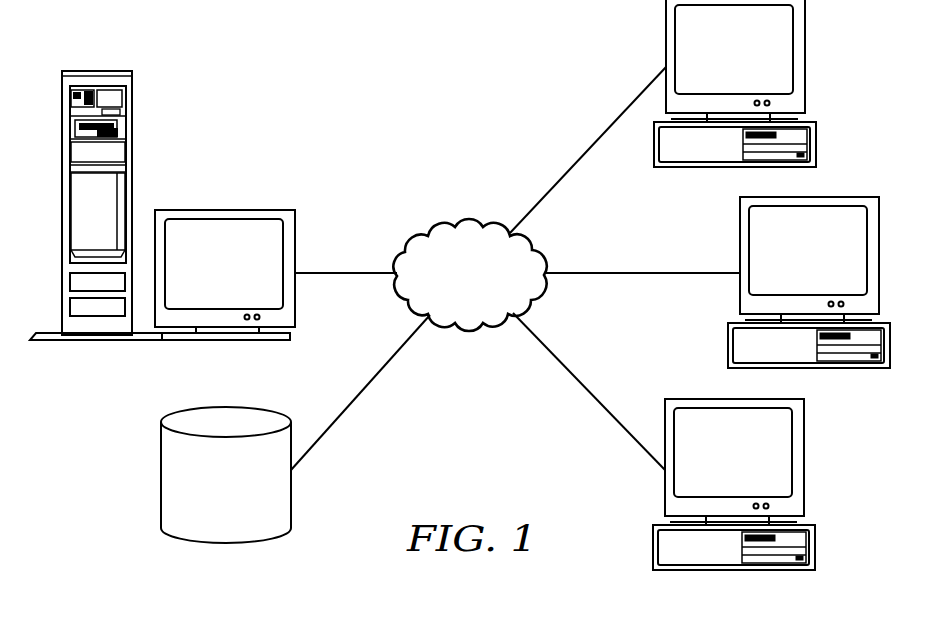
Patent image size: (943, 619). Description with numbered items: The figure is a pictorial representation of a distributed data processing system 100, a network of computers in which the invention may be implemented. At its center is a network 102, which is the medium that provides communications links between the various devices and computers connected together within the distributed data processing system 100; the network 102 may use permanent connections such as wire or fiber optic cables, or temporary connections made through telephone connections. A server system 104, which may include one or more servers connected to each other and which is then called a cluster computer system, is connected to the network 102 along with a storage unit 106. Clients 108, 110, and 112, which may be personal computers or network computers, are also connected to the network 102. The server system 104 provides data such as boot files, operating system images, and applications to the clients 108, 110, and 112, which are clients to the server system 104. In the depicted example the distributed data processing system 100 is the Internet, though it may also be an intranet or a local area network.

The distributed data processing system 100 is at (331, 58).
The network 102 is at (491, 285).
The server system 104 is at (249, 275).
The storage unit 106 is at (251, 497).
The client 108 is at (757, 67).
The client 110 is at (831, 268).
The client 112 is at (758, 469).